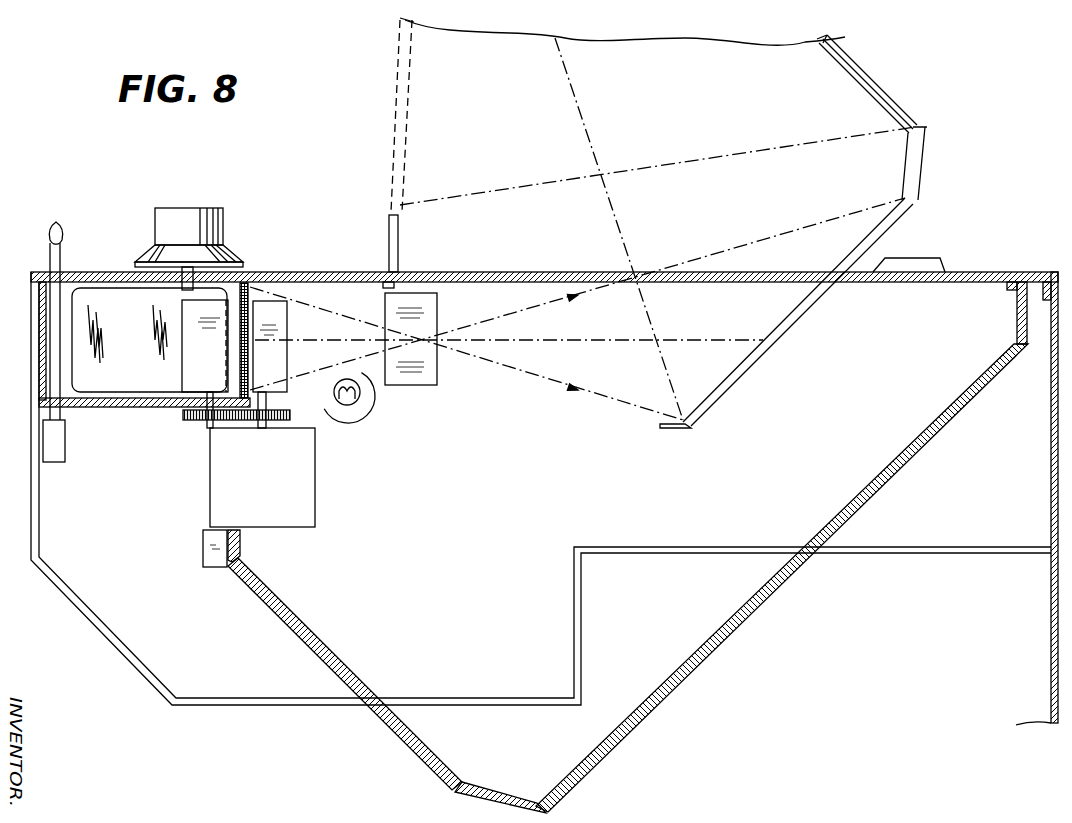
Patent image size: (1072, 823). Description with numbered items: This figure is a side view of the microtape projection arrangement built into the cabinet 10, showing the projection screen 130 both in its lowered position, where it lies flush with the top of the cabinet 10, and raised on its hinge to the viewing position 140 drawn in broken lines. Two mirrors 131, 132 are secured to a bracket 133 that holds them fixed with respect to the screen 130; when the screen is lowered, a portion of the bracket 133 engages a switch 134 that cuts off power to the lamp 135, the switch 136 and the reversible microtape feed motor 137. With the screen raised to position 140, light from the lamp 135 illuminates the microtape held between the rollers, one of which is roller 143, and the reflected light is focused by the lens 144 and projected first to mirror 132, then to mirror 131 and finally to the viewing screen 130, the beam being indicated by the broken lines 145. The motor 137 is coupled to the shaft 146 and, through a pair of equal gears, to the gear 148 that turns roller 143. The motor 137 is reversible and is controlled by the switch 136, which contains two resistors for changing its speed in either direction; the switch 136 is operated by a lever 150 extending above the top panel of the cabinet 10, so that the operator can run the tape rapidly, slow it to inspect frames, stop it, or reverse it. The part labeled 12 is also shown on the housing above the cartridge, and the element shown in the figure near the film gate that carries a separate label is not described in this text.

The cabinet 10 is at (1044, 272).
The objective lens housing 12 is at (187, 217).
The projection screen 130 is at (397, 128).
The mirror 131 is at (863, 68).
The mirror 132 is at (785, 316).
The bracket 133 is at (240, 545).
The switch 134 is at (203, 553).
The lamp 135 is at (345, 379).
The switch 136 is at (60, 447).
The microtape feed motor 137 is at (305, 502).
The raised position 140 is at (388, 82).
The roller 143 is at (188, 380).
The lens 144 is at (437, 378).
The light beam 145 is at (578, 100).
The shaft 146 is at (248, 392).
The gear 148 is at (184, 422).
The lever 150 is at (50, 230).